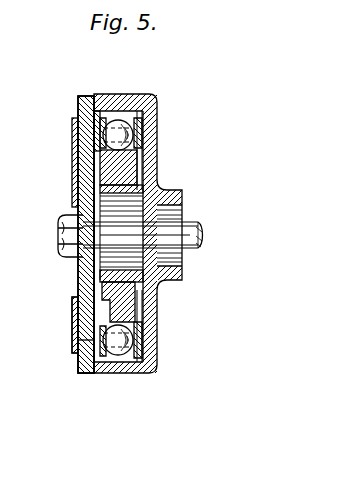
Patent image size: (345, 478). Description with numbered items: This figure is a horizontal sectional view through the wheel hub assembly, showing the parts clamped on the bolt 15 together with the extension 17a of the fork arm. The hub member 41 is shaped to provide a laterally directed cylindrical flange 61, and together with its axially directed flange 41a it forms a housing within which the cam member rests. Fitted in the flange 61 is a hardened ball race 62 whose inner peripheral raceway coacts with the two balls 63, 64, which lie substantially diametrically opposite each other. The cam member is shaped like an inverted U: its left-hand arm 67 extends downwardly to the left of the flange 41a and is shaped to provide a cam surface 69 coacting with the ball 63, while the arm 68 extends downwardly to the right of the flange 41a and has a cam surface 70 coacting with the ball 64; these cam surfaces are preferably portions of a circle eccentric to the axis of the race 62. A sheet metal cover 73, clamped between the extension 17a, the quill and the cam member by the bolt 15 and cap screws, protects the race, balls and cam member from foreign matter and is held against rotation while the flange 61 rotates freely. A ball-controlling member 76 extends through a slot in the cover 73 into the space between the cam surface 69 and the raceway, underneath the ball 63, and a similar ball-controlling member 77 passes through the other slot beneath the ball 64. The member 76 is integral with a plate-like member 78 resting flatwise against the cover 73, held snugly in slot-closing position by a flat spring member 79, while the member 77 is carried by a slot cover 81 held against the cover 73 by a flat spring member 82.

The bolt 15 is at (183, 225).
The extension of arm 17a is at (86, 278).
The hub member 41 is at (150, 141).
The flange of hub member 41a is at (90, 190).
The cylindrical flange 61 is at (128, 94).
The ball race 62 is at (154, 99).
The ball 63 is at (134, 130).
The ball 64 is at (126, 341).
The left-hand arm of cam member 67 is at (122, 176).
The arm of cam member 68 is at (135, 296).
The cam surface 69 is at (142, 158).
The cam surface 70 is at (135, 323).
The cover 73 is at (98, 208).
The ball-controlling member 76 is at (100, 128).
The ball-controlling member 77 is at (80, 375).
The plate-like member 78 is at (78, 100).
The flat spring member 79 is at (72, 140).
The slot cover 81 is at (78, 355).
The flat spring member 82 is at (72, 315).